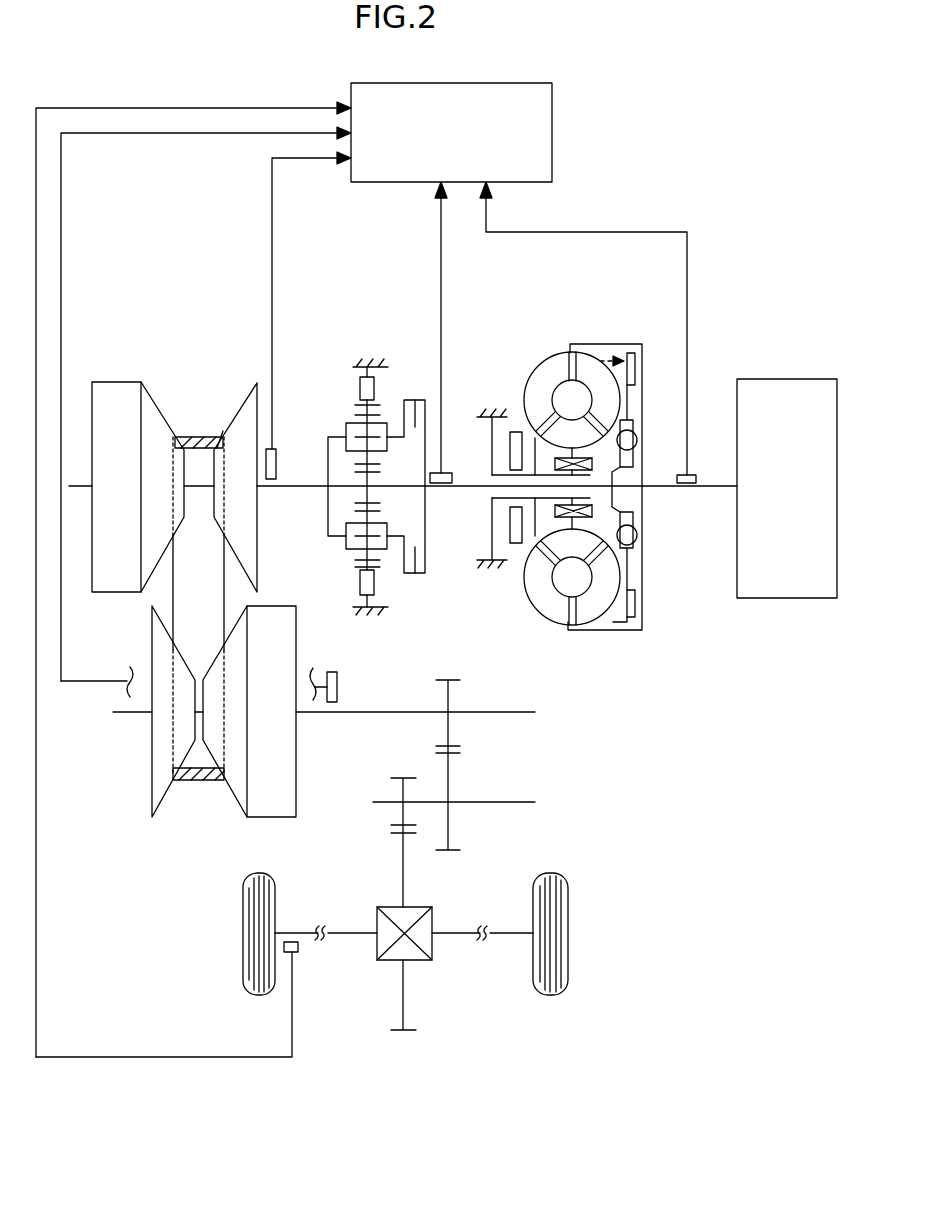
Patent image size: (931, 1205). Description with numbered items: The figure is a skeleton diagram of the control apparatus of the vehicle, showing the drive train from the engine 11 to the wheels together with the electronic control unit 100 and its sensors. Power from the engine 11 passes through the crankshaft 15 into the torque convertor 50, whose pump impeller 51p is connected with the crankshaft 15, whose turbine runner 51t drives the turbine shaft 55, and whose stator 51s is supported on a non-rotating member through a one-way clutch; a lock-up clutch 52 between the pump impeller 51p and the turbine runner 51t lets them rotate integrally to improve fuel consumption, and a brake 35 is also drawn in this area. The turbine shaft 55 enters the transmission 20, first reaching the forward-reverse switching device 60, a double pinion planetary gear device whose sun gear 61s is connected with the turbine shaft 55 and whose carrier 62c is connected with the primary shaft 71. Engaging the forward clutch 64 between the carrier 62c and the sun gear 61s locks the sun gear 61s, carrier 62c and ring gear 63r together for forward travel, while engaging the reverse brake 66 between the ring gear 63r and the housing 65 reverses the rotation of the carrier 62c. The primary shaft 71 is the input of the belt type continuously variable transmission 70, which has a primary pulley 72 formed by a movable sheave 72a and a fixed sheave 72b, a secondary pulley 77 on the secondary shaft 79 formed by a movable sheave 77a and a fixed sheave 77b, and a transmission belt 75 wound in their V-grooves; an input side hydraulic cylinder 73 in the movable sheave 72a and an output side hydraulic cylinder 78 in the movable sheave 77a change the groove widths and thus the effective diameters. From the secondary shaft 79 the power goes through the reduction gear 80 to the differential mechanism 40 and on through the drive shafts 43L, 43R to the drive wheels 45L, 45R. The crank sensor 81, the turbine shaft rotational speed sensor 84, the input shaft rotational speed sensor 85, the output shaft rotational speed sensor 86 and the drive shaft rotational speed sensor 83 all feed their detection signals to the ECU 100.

The electronic control unit 100 is at (510, 82).
The transmission 20 is at (669, 194).
The engine 11 is at (768, 378).
The crankshaft 15 is at (713, 484).
The turbine shaft 55 is at (445, 492).
The torque convertor 50 is at (576, 470).
The pump impeller 51p is at (545, 600).
The stator 51s is at (529, 429).
The turbine runner 51t is at (582, 604).
The brake 35 is at (513, 432).
The lock-up clutch 52 is at (632, 372).
The crank sensor 81 is at (676, 472).
The turbine shaft rotational speed sensor 84 is at (452, 470).
The input shaft rotational speed sensor 85 is at (275, 447).
The output shaft rotational speed sensor 86 is at (336, 674).
The drive shaft rotational speed sensor 83 is at (298, 952).
The forward-reverse switching device 60 is at (357, 453).
The housing 65 is at (375, 353).
The reverse brake 66 is at (360, 380).
The carrier 62c is at (348, 422).
The sun gear 61s is at (357, 501).
The ring gear 63r is at (357, 568).
The forward clutch 64 is at (408, 577).
The primary shaft 71 is at (300, 485).
The belt type continuously variable transmission 70 is at (191, 630).
The primary pulley 72 is at (174, 452).
The input side hydraulic cylinder 73 is at (108, 401).
The movable sheave 72a is at (148, 412).
The fixed sheave 72b is at (247, 418).
The transmission belt 75 is at (195, 437).
The secondary pulley 77 is at (231, 745).
The movable sheave 77a is at (238, 785).
The fixed sheave 77b is at (158, 785).
The output side hydraulic cylinder 78 is at (279, 736).
The secondary shaft 79 is at (368, 715).
The reduction gear 80 is at (544, 758).
The differential mechanism 40 is at (390, 958).
The left drive shaft 43L is at (340, 930).
The right drive shaft 43R is at (443, 930).
The left drive wheel 45L is at (243, 972).
The right drive wheel 45R is at (570, 964).